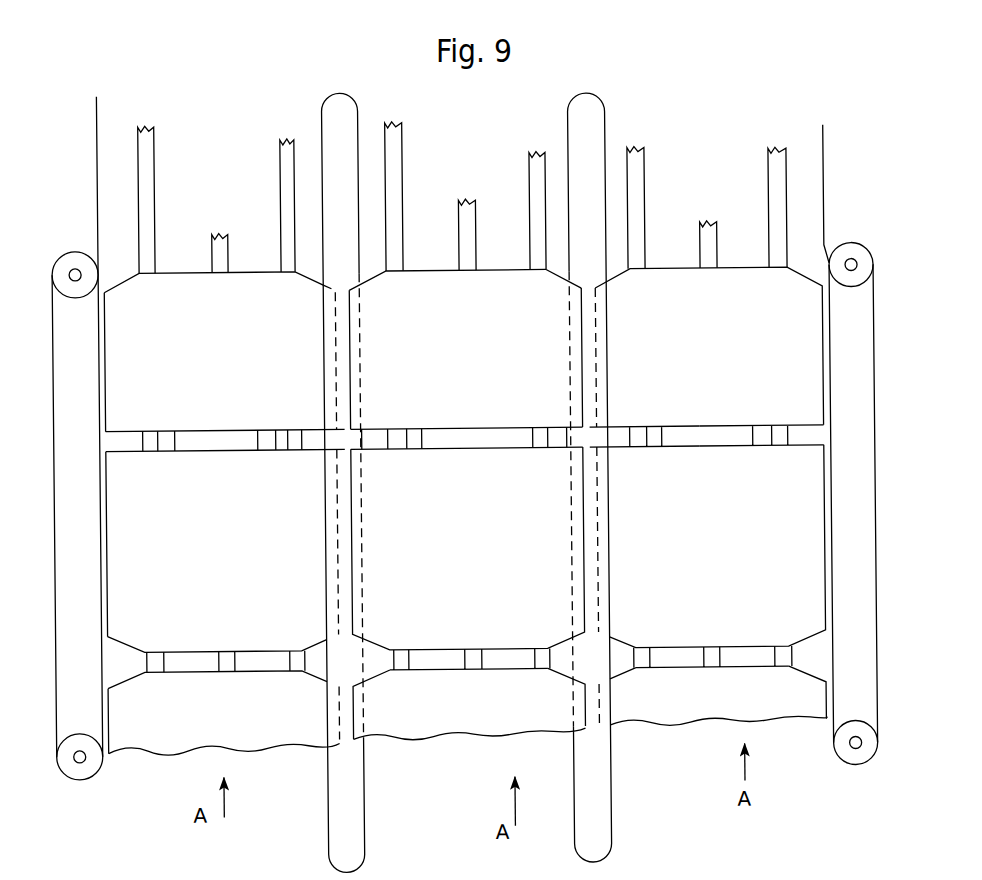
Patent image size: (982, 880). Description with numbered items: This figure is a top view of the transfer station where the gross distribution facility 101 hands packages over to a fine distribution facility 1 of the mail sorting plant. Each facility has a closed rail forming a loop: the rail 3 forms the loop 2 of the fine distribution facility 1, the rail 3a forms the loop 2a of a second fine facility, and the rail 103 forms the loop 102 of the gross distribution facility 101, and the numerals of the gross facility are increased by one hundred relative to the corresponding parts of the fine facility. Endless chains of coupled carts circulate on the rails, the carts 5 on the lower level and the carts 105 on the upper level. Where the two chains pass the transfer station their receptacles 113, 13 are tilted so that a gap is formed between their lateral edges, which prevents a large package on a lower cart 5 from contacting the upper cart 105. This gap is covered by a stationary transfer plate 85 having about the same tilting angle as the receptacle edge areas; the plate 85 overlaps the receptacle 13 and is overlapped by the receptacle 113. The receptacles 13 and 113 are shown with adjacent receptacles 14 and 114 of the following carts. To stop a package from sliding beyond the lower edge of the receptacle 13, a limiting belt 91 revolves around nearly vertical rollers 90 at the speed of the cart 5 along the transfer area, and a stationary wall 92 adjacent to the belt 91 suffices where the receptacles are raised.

The fine distribution facility 1 is at (803, 190).
The loop 2 is at (800, 140).
The loop 2a is at (142, 106).
The closed rail 3 is at (779, 231).
The closed rail 3a is at (295, 248).
The cart 5 is at (808, 438).
The receptacle 13 is at (801, 391).
The panel 14 is at (796, 578).
The stationary transfer plate 85 is at (607, 829).
The roller 90 is at (858, 746).
The limiting belt 91 is at (873, 644).
The stationary wall 92 is at (828, 213).
The gross distribution facility 101 is at (534, 120).
The loop 102 is at (560, 190).
The closed rail 103 is at (538, 180).
The cart 105 is at (586, 436).
The receptacle 113 is at (401, 302).
The panel 114 is at (461, 622).